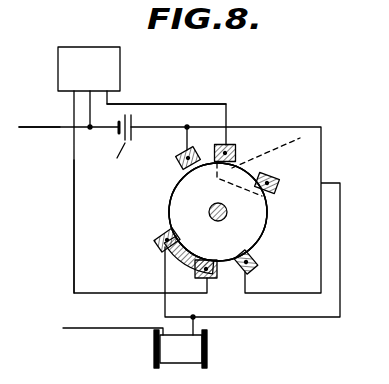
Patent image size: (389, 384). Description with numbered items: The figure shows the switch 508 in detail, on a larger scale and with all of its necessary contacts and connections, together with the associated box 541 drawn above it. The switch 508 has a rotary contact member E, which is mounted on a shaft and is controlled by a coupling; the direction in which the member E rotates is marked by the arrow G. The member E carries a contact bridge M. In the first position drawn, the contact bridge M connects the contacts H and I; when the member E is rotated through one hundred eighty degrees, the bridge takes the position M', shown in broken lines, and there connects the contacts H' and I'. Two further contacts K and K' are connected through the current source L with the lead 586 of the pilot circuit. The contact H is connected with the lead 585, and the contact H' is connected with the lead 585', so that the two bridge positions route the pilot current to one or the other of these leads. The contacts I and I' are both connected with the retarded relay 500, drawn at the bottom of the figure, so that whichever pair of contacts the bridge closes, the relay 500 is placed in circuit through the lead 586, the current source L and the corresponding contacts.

The control unit 541 is at (68, 62).
The lead of the pilot circuit 586 is at (43, 126).
The lead 585 is at (51, 226).
The lead 585' is at (166, 87).
The switch 508 is at (160, 218).
The retarded relay 500 is at (180, 350).
The current source L is at (116, 159).
The arrow G is at (263, 233).
The rotary contact member E is at (172, 181).
The contact bridge M is at (218, 212).
The contact bridge position M' is at (258, 167).
The contact K' is at (175, 152).
The contact H' is at (240, 143).
The contact I' is at (280, 176).
The contact K is at (259, 267).
The contact H is at (211, 280).
The contact I is at (146, 240).